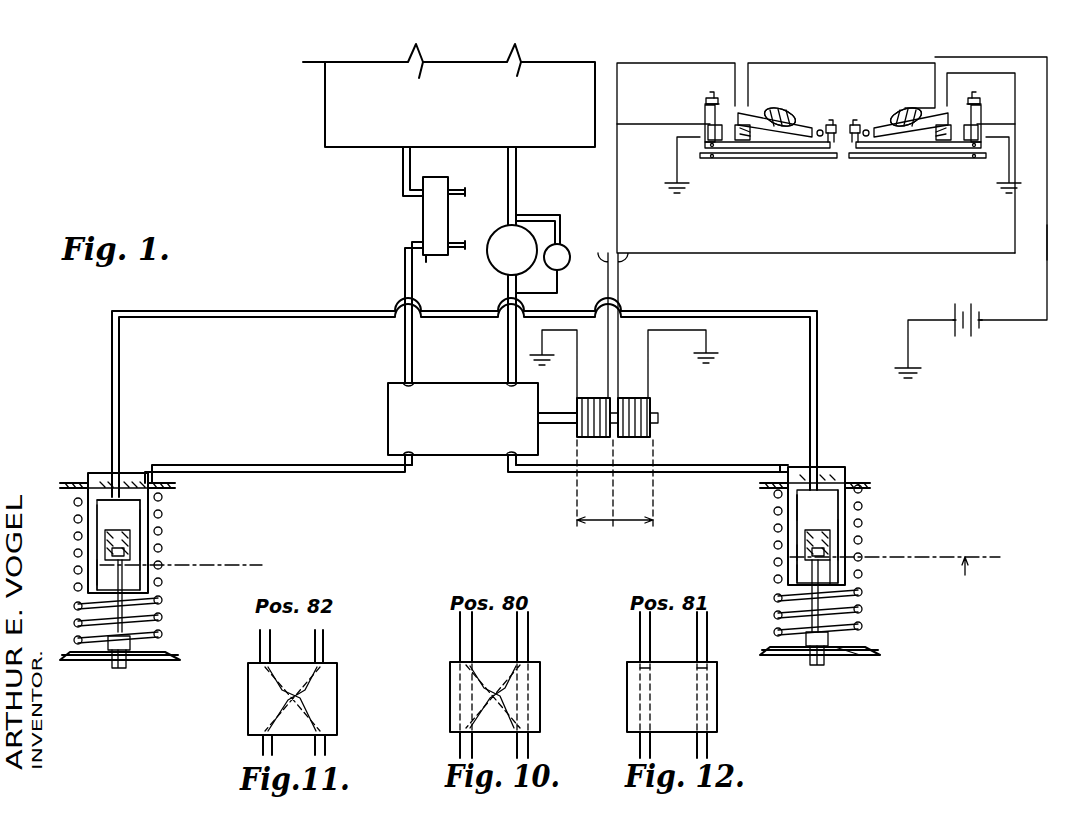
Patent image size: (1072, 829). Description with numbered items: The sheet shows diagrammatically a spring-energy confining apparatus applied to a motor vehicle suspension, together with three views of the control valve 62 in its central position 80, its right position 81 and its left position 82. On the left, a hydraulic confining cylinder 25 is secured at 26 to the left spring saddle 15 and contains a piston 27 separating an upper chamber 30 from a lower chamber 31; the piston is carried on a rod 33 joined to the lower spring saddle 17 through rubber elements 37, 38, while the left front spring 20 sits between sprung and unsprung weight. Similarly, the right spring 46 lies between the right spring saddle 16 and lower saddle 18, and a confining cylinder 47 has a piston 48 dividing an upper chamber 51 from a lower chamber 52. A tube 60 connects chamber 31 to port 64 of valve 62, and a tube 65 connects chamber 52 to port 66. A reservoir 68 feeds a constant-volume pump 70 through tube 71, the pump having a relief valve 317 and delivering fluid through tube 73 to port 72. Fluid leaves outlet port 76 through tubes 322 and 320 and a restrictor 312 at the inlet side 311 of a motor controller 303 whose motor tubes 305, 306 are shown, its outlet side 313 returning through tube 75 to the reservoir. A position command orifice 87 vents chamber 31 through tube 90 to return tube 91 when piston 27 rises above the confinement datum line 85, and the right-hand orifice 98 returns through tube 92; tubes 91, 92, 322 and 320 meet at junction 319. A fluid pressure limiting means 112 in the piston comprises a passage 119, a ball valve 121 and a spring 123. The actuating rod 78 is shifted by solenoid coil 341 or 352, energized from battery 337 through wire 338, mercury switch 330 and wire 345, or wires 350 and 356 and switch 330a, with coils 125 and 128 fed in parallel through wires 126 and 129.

In FIG. 1, the reservoir 68 is at (324, 80).
In FIG. 1, the tube 75 is at (401, 158).
In FIG. 1, the hydraulically actuated motor controller 303 is at (436, 177).
In FIG. 1, the hydraulic tube 306 is at (460, 190).
In FIG. 1, the hydraulic tube 305 is at (457, 250).
In FIG. 1, the inlet side of the controller 311 is at (430, 255).
In FIG. 1, the outlet side of the controller 313 is at (423, 197).
In FIG. 1, the restrictor 312 is at (410, 244).
In FIG. 1, the tube 320 is at (404, 262).
In FIG. 1, the tube 71 is at (516, 178).
In FIG. 1, the pump 70 is at (525, 238).
In FIG. 1, the relief valve 317 is at (562, 248).
In FIG. 1, the tube 73 is at (508, 328).
In FIG. 11, the tube 73 is at (320, 642).
In FIG. 10, the tube 73 is at (524, 628).
In FIG. 12, the tube 73 is at (705, 642).
In FIG. 1, the tube 92 is at (194, 318).
In FIG. 1, the junction 319 is at (404, 316).
In FIG. 1, the tube 322 is at (404, 342).
In FIG. 11, the tube 322 is at (259, 648).
In FIG. 10, the tube 322 is at (461, 622).
In FIG. 12, the tube 322 is at (641, 624).
In FIG. 1, the fluid return tube 91 is at (818, 372).
In FIG. 1, the valve 62 is at (463, 419).
In FIG. 11, the valve 62 is at (328, 692).
In FIG. 10, the valve 62 is at (530, 688).
In FIG. 1, the outlet port 76 is at (420, 383).
In FIG. 11, the outlet port 76 is at (266, 664).
In FIG. 10, the outlet port 76 is at (456, 672).
In FIG. 12, the outlet port 76 is at (634, 674).
In FIG. 1, the port 72 is at (506, 383).
In FIG. 11, the port 72 is at (322, 665).
In FIG. 10, the port 72 is at (526, 664).
In FIG. 12, the port 72 is at (708, 668).
In FIG. 1, the tube 65 is at (282, 473).
In FIG. 11, the tube 65 is at (262, 747).
In FIG. 10, the tube 65 is at (460, 748).
In FIG. 12, the tube 65 is at (641, 748).
In FIG. 1, the port 66 is at (414, 460).
In FIG. 11, the port 66 is at (265, 730).
In FIG. 10, the port 66 is at (462, 728).
In FIG. 12, the port 66 is at (643, 728).
In FIG. 1, the hydraulic tube 60 is at (690, 465).
In FIG. 11, the hydraulic tube 60 is at (326, 745).
In FIG. 10, the hydraulic tube 60 is at (529, 744).
In FIG. 12, the hydraulic tube 60 is at (708, 745).
In FIG. 1, the port 64 is at (512, 460).
In FIG. 11, the port 64 is at (322, 730).
In FIG. 10, the port 64 is at (526, 726).
In FIG. 12, the port 64 is at (706, 728).
In FIG. 1, the tube 90 is at (818, 458).
In FIG. 1, the actuating rod 78 is at (556, 424).
In FIG. 1, the solenoid coil 352 is at (590, 398).
In FIG. 1, the solenoid coil 341 is at (652, 400).
In FIG. 1, the valve position 82 is at (576, 477).
In FIG. 1, the valve position 81 is at (654, 472).
In FIG. 1, the central position 80 is at (613, 530).
In FIG. 1, the wire 345 is at (680, 52).
In FIG. 1, the wire 356 is at (1030, 72).
In FIG. 1, the wire 350 is at (937, 64).
In FIG. 1, the electromagnetic coil 125 is at (708, 128).
In FIG. 1, the coil 128 is at (970, 135).
In FIG. 1, the wire 126 is at (705, 124).
In FIG. 1, the mercury switch 330 is at (773, 102).
In FIG. 1, the wire 129 is at (965, 122).
In FIG. 1, the second mercury switch 330a is at (899, 102).
In FIG. 1, the battery 337 is at (978, 327).
In FIG. 1, the wire 338 is at (1045, 236).
In FIG. 1, the right spring saddle 16 is at (90, 476).
In FIG. 1, the hydraulic confining cylinder 47 is at (76, 490).
In FIG. 1, the upper chamber 51 is at (145, 502).
In FIG. 1, the right spring 46 is at (148, 522).
In FIG. 1, the spring 123 is at (125, 534).
In FIG. 1, the fluid pressure limiting means 112 is at (96, 535).
In FIG. 1, the ball valve 121 is at (126, 550).
In FIG. 1, the piston 48 is at (175, 566).
In FIG. 1, the position command orifice 98 is at (95, 570).
In FIG. 1, the lower chamber 52 is at (108, 587).
In FIG. 1, the lower spring saddle 18 is at (82, 662).
In FIG. 1, the left spring saddle 15 is at (846, 470).
In FIG. 1, the securing point 26 is at (862, 483).
In FIG. 1, the hydraulic confining cylinder 25 is at (842, 498).
In FIG. 1, the left front spring 20 is at (845, 545).
In FIG. 1, the piston 27 is at (882, 557).
In FIG. 1, the confinement position datum line 85 is at (973, 575).
In FIG. 1, the position command orifice 87 is at (846, 570).
In FIG. 1, the passage 119 is at (797, 552).
In FIG. 1, the lower chamber 31 is at (792, 570).
In FIG. 1, the upper chamber 30 is at (797, 500).
In FIG. 1, the rod 33 is at (778, 604).
In FIG. 1, the lower spring saddle 17 is at (875, 648).
In FIG. 1, the rubber element 37 is at (838, 655).
In FIG. 1, the rubber element 38 is at (826, 664).